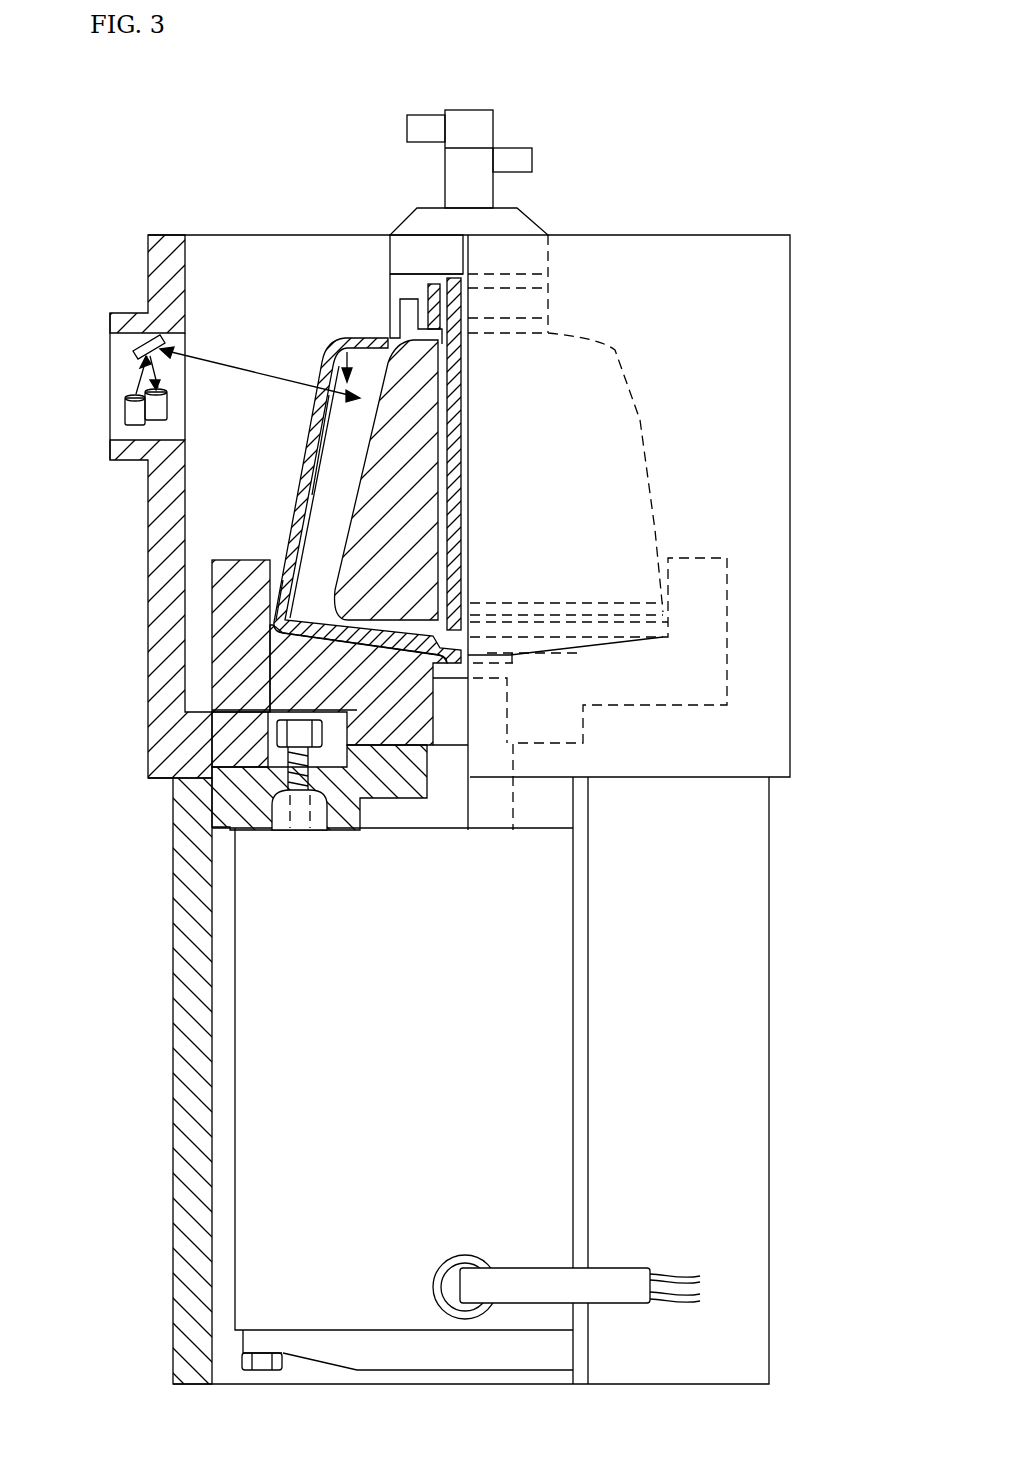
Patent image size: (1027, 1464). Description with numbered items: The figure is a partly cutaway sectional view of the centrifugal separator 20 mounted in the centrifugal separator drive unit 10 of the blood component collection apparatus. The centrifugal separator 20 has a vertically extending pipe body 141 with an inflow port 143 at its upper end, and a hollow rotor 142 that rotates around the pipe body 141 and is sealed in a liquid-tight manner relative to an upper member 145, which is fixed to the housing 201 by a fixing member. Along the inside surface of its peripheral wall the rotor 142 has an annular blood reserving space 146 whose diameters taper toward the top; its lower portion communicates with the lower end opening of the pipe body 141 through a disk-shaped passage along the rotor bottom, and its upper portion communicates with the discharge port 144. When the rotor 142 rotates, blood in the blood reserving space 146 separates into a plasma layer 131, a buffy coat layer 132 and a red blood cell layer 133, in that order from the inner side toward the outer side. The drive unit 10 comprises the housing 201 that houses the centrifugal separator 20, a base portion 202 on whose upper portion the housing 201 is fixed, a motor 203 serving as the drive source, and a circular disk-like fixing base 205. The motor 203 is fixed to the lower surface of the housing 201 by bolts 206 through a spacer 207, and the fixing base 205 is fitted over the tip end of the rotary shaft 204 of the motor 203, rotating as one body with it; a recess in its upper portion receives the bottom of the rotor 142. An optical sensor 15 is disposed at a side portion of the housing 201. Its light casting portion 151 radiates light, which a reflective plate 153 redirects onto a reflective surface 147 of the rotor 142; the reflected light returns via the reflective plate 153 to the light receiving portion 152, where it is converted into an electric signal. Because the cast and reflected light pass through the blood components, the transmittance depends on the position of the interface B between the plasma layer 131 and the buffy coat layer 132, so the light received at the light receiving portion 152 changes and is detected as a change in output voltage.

The centrifugal separator drive unit 10 is at (770, 856).
The optical sensor 15 is at (98, 373).
The centrifugal separator 20 is at (648, 486).
The plasma layer 131 is at (363, 358).
The buffy coat layer 132 is at (328, 495).
The red blood cell layer 133 is at (298, 556).
The pipe body 141 is at (463, 412).
The rotor 142 is at (325, 360).
The inflow port 143 is at (407, 124).
The discharge port 144 is at (512, 148).
The upper member 145 is at (493, 190).
The blood reserving space 146 is at (345, 350).
The reflective surface 147 is at (362, 422).
The light casting portion 151 is at (125, 406).
The light receiving portion 152 is at (147, 447).
The reflective plate 153 is at (133, 340).
The housing 201 is at (790, 532).
The base portion 202 is at (190, 1048).
The motor 203 is at (255, 968).
The rotary shaft 204 is at (452, 730).
The fixing base 205 is at (225, 624).
The bolts 206 is at (288, 752).
The spacer 207 is at (222, 808).
The interface B is at (330, 450).